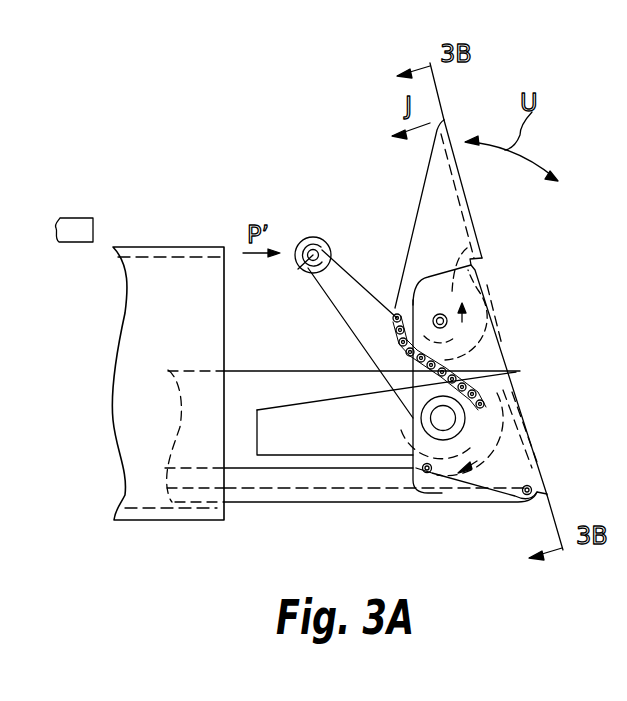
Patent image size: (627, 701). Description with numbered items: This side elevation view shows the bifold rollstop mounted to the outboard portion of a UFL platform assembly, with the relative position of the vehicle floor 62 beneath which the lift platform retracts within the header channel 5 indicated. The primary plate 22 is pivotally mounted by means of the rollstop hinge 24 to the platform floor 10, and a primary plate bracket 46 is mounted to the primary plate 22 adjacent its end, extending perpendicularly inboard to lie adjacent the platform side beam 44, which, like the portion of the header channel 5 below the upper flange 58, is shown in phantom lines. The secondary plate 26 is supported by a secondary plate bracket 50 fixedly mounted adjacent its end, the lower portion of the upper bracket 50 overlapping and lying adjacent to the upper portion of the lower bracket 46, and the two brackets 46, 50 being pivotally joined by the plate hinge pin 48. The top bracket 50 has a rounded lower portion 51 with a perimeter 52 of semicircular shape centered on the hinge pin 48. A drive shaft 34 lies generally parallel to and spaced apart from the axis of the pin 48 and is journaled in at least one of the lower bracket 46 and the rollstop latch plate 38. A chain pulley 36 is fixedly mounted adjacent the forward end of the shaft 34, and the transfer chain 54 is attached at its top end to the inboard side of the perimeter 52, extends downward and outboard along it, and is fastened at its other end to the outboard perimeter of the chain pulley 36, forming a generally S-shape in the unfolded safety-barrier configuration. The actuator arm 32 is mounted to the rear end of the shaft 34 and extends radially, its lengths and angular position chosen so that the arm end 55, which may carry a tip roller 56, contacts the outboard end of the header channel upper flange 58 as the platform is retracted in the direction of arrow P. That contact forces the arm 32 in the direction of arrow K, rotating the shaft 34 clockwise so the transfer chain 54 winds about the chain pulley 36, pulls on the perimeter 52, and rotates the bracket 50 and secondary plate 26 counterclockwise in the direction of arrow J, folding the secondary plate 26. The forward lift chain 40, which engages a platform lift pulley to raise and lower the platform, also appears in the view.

The header channel 5 is at (177, 314).
The platform floor 10 is at (313, 493).
The primary plate 22 is at (512, 337).
The rollstop hinge 24 is at (523, 495).
The secondary plate 26 is at (473, 202).
The actuator arm 32 is at (352, 282).
The drive shaft 34 is at (432, 418).
The chain pulley 36 is at (458, 500).
The rollstop latch plate 38 is at (324, 438).
The lift chain 40 is at (235, 467).
The platform side beam 44 is at (256, 402).
The primary plate bracket 46 is at (522, 372).
The plate hinge pin 48 is at (434, 316).
The secondary plate bracket 50 is at (449, 222).
The rounded lower portion 51 is at (481, 256).
The perimeter 52 is at (508, 322).
The transfer chain 54 is at (393, 347).
The arm end 55 is at (291, 282).
The tip roller 56 is at (311, 237).
The upper flange 58 is at (229, 246).
The vehicle floor 62 is at (94, 226).